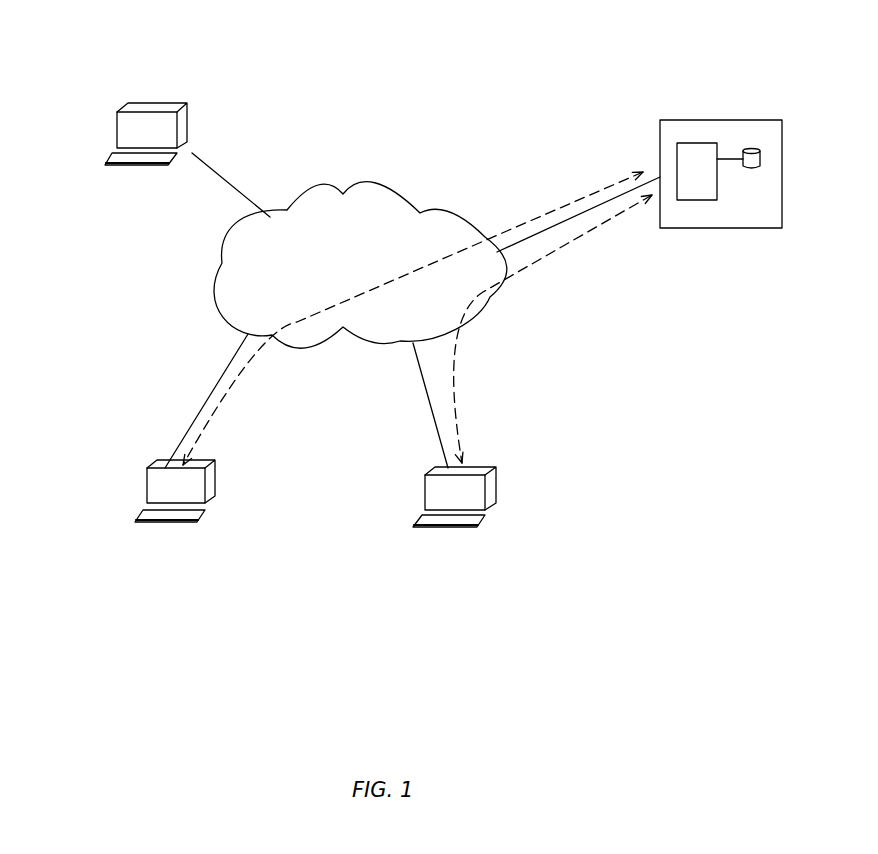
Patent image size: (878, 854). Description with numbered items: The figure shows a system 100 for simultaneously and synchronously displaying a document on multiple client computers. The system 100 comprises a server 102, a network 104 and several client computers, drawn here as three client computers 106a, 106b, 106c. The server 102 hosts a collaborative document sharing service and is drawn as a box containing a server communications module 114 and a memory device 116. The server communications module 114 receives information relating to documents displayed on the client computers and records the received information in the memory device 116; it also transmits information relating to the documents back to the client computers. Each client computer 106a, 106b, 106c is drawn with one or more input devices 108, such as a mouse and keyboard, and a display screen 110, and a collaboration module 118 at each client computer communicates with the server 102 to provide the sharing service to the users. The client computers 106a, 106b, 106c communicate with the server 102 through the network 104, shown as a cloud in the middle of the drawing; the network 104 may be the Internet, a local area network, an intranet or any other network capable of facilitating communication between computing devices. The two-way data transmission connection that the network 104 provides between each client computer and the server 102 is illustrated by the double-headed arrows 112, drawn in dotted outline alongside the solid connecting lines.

The system 100 is at (405, 113).
The server 102 is at (756, 163).
The network 104 is at (215, 303).
The client computer 106a is at (505, 501).
The client computer 106b is at (141, 501).
The client computer 106c is at (190, 145).
The input device 108 is at (158, 172).
The display screen 110 is at (162, 110).
The double-headed arrow 112 is at (230, 380).
The server communications module 114 is at (698, 147).
The memory device 116 is at (753, 170).
The collaboration module 118 is at (123, 135).